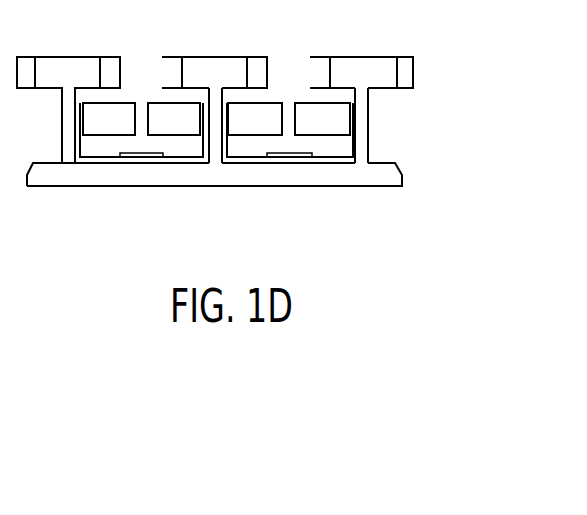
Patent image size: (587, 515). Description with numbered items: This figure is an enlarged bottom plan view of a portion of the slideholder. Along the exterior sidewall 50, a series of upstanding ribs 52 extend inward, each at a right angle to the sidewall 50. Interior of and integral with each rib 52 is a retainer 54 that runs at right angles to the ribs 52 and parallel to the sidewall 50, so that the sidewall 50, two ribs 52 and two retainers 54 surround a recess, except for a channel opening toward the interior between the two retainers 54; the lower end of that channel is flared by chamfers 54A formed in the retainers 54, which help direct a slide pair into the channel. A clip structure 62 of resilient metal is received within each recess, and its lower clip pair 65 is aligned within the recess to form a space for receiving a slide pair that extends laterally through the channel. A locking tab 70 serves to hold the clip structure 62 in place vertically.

The exterior sidewall 50 is at (387, 175).
The rib 52 is at (363, 115).
The retainer 54 is at (366, 73).
The chamfer 54A is at (257, 72).
The clip structure 62 is at (103, 102).
The lower clip pair 65 is at (168, 122).
The locking tab 70 is at (287, 158).